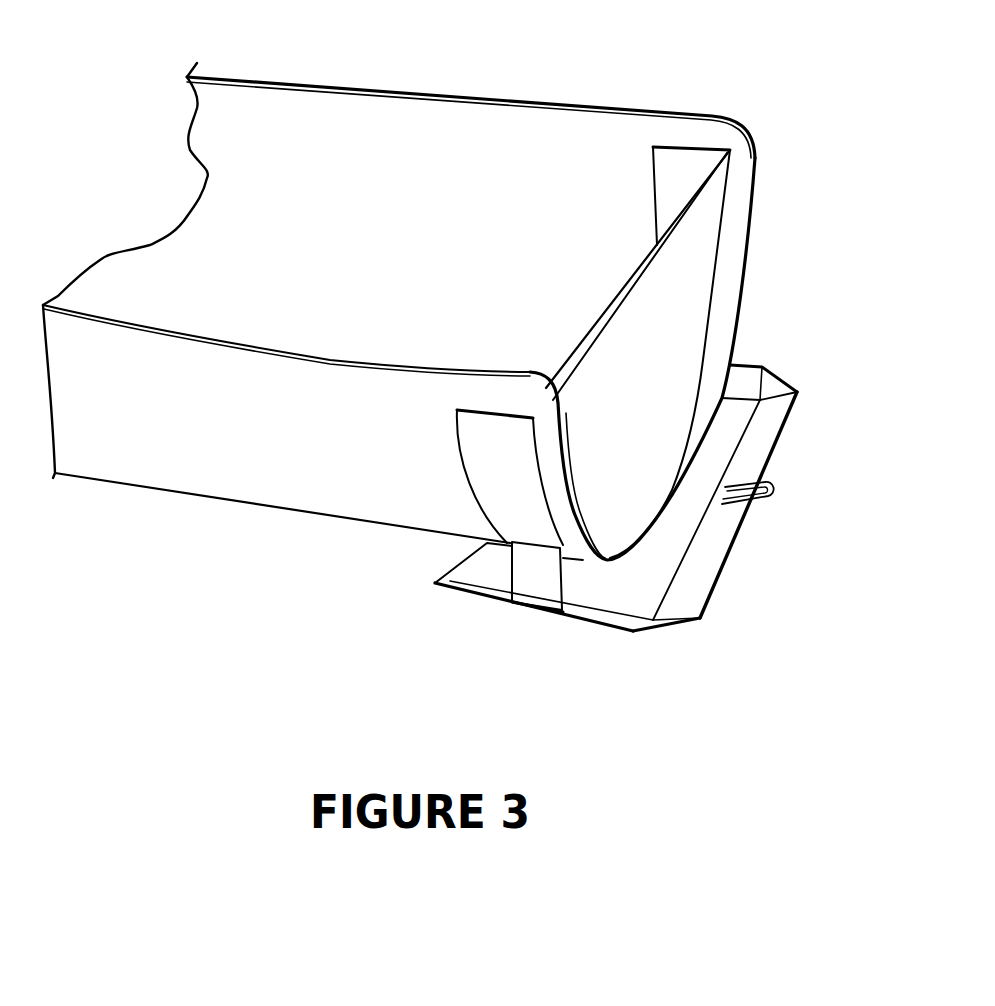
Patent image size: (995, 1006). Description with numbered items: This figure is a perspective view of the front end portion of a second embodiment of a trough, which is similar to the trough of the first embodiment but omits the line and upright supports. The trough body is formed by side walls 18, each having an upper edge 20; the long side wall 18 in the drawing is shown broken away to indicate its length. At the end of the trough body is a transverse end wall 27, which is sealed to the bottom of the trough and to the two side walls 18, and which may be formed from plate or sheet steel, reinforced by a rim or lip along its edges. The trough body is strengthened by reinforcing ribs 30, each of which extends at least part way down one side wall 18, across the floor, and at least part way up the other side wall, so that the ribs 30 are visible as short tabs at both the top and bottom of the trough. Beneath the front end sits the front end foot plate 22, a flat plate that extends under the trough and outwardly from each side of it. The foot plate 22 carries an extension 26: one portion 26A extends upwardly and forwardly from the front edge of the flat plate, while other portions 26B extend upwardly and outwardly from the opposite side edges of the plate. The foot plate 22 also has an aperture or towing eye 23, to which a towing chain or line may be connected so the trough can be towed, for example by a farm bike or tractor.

The side wall 18 is at (286, 303).
The upper edge 20 is at (503, 97).
The front end foot plate 22 is at (713, 457).
The towing eye 23 is at (777, 488).
The extension 26 is at (742, 529).
The front portion of extension 26A is at (695, 587).
The side portions of extension 26B is at (743, 383).
The transverse end wall 27 is at (703, 250).
The reinforcing rib 30 is at (682, 158).